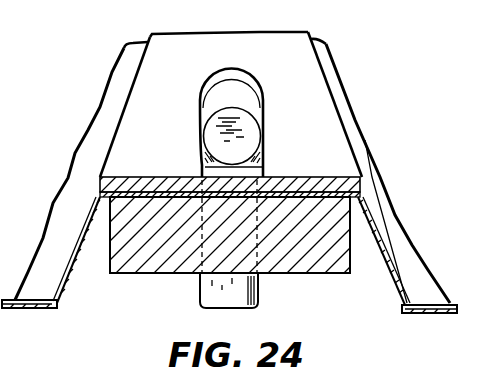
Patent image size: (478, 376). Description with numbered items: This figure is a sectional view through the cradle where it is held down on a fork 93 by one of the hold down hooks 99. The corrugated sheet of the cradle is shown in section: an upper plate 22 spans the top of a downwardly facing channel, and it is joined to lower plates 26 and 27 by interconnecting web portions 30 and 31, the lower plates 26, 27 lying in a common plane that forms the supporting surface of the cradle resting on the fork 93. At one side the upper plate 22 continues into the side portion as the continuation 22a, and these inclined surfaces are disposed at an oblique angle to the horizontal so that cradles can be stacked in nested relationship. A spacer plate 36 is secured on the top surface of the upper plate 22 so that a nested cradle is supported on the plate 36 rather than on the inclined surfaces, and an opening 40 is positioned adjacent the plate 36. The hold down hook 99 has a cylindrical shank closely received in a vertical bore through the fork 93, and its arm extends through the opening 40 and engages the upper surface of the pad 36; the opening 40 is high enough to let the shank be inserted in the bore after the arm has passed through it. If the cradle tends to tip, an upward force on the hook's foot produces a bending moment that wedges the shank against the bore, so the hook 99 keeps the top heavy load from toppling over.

The continuation of upper plate 22a is at (303, 72).
The upper plate 22 is at (147, 177).
The spacer plate 36 is at (175, 190).
The opening 40 is at (220, 72).
The hold down hook 99 is at (238, 137).
The fork 93 is at (165, 258).
The web portion 30 is at (67, 274).
The lower plate 26 is at (30, 309).
The web portion 31 is at (373, 222).
The lower plate 27 is at (420, 314).